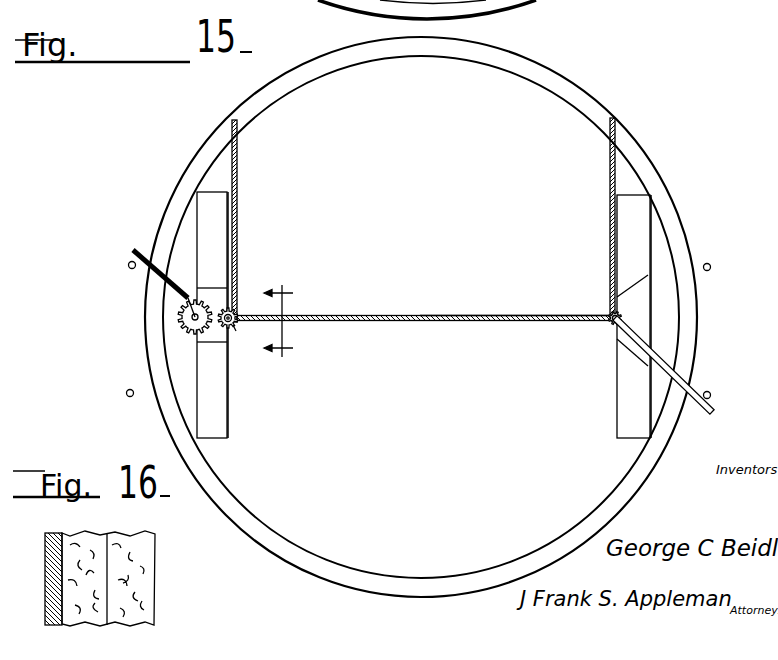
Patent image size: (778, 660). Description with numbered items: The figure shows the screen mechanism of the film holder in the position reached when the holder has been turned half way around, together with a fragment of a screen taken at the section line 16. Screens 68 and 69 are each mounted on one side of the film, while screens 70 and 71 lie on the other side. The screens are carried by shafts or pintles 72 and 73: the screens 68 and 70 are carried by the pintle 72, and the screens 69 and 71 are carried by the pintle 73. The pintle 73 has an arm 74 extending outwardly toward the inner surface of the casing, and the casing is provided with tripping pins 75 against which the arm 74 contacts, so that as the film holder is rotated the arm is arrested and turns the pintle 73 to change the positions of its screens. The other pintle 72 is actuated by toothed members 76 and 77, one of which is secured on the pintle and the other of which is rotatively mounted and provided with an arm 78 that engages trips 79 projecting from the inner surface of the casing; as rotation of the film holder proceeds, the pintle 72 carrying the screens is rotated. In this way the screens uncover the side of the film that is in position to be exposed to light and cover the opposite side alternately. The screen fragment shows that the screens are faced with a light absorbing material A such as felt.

In FIG. 15, the screen 68 is at (237, 225).
In FIG. 15, the screen 69 is at (610, 211).
In FIG. 15, the screen 70 is at (362, 322).
In FIG. 15, the screen 71 is at (530, 322).
In FIG. 15, the pintle 72 is at (233, 315).
In FIG. 15, the pintle 73 is at (608, 323).
In FIG. 15, the arm 74 is at (700, 401).
In FIG. 15, the tripping pins 75 is at (126, 393).
In FIG. 15, the toothed member 76 is at (236, 331).
In FIG. 15, the toothed member 77 is at (193, 334).
In FIG. 15, the arm 78 is at (152, 238).
In FIG. 15, the trips 79 is at (128, 265).
In FIG. 15, the section line 16 is at (295, 323).
In FIG. 16, the light absorbing material A is at (78, 550).